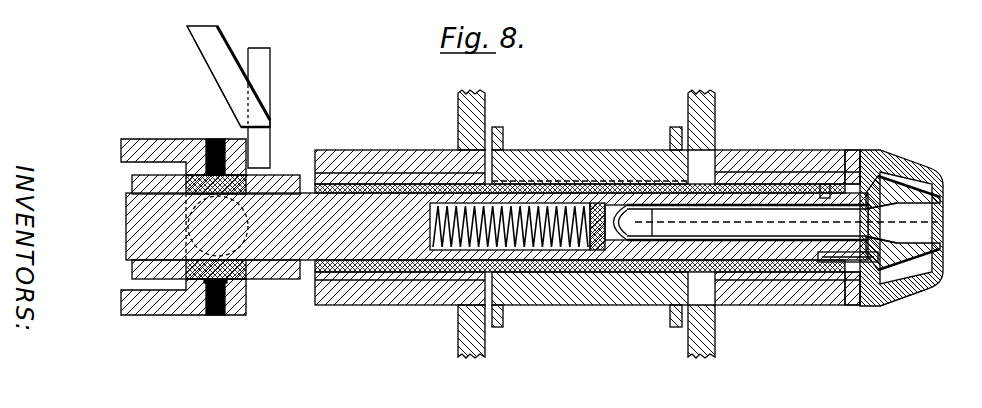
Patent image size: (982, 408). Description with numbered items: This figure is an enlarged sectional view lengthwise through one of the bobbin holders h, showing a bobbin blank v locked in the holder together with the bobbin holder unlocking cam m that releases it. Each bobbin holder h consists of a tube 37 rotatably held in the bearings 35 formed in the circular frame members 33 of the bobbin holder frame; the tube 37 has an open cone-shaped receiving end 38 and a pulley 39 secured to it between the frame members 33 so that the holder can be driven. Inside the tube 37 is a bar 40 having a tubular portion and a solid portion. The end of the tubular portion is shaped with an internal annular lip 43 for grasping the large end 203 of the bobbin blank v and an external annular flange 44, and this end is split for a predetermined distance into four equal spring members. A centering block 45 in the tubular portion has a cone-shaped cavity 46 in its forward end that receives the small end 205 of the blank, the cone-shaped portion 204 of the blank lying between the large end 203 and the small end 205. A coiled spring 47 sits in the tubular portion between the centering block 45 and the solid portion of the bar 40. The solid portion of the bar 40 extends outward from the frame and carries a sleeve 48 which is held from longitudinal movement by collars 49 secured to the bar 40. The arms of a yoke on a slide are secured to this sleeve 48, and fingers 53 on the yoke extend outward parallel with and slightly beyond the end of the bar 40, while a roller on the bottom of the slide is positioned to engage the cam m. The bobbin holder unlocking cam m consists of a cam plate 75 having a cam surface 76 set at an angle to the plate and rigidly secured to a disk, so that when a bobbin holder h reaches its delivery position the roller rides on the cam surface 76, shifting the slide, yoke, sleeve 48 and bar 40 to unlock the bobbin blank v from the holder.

The bobbin holder unlocking cam m is at (196, 44).
The cam plate 75 is at (270, 81).
The cam surface 76 is at (225, 96).
The fingers 53 is at (158, 131).
The collars 49 is at (132, 181).
The sleeve 48 is at (234, 283).
The bar 40 is at (126, 226).
The tube 37 is at (340, 186).
The bearings 35 is at (397, 155).
The circular frame members 33 is at (458, 92).
The pulley 39 is at (581, 158).
The coiled spring 47 is at (531, 245).
The centering block 45 is at (606, 249).
The cone-shaped cavity 46 is at (619, 257).
The small end 205 is at (646, 242).
The bobbin blank v is at (785, 226).
The bobbin holder h is at (873, 157).
The cone-shaped receiving end 38 is at (910, 165).
The internal annular lip 43 is at (937, 205).
The external annular flange 44 is at (937, 260).
The large end 203 is at (933, 288).
The cone-shaped portion 204 is at (872, 293).